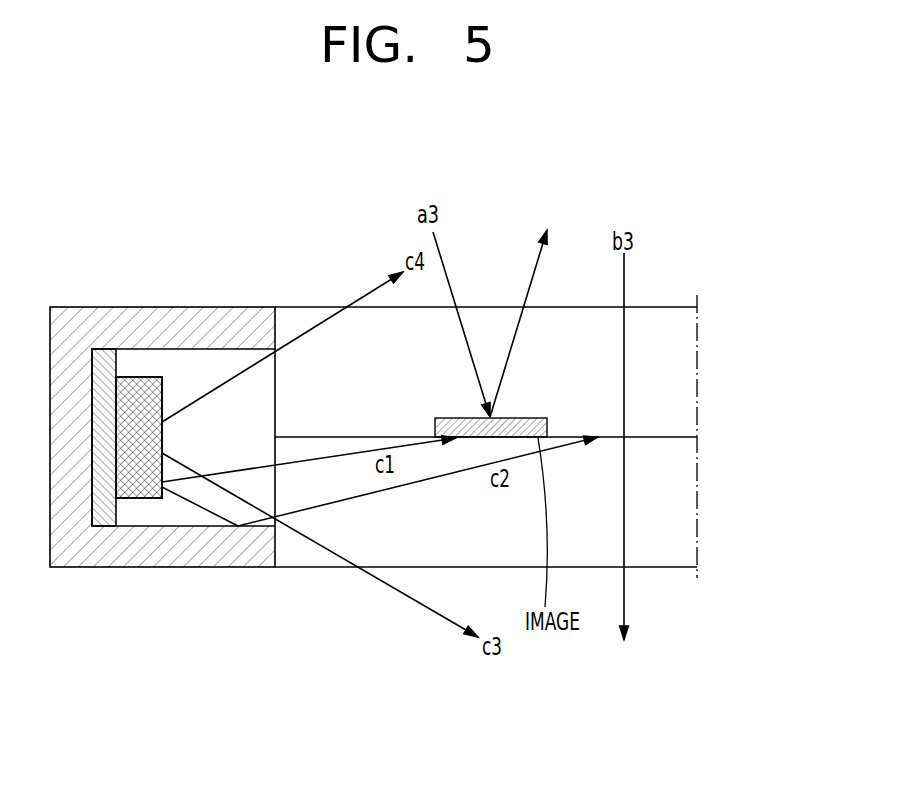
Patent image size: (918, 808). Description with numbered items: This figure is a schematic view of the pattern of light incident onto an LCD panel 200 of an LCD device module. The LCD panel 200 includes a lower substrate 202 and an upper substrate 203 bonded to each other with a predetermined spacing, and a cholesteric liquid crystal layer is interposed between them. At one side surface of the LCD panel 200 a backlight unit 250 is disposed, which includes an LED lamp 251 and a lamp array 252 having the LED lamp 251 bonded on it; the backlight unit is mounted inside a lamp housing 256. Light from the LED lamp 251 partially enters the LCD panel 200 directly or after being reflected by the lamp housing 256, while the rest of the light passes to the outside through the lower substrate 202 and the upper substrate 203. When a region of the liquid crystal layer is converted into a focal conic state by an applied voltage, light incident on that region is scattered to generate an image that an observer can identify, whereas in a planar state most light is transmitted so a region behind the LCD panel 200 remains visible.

The LCD panel 200 is at (549, 436).
The lower substrate 202 is at (522, 510).
The upper substrate 203 is at (690, 397).
The optical sensor module 250 is at (162, 502).
The LED lamp 251 is at (143, 490).
The lamp array 252 is at (104, 510).
The lamp housing 256 is at (207, 553).